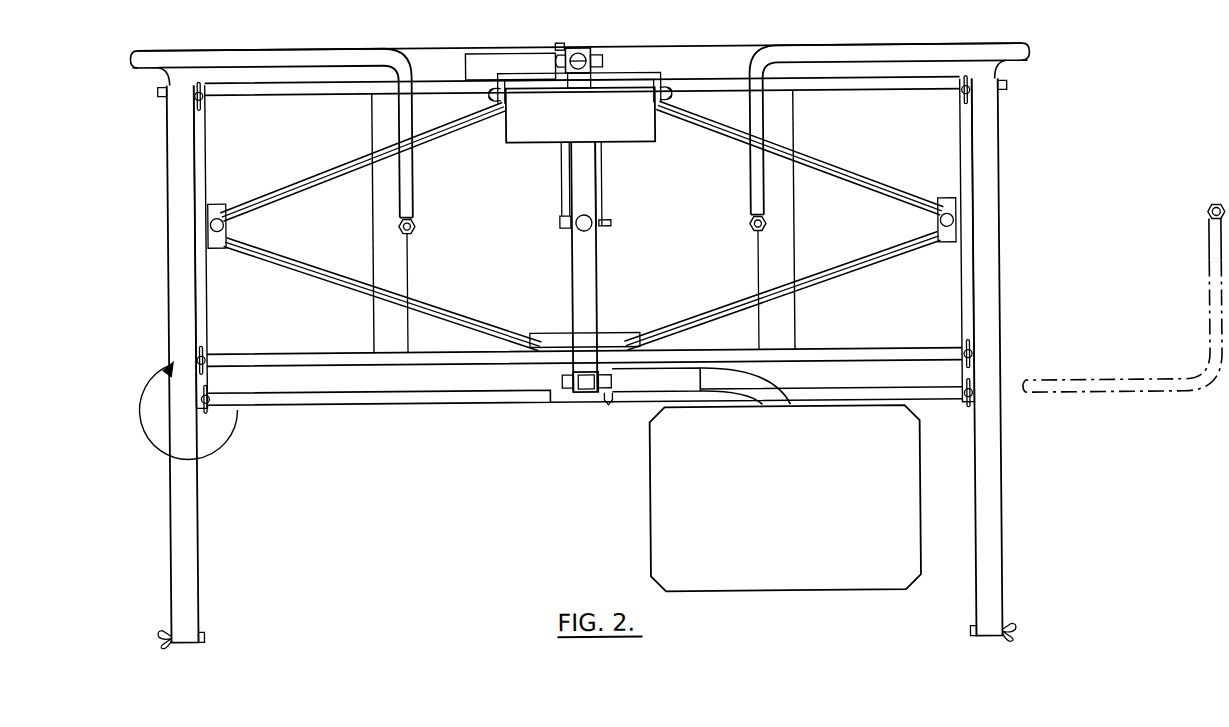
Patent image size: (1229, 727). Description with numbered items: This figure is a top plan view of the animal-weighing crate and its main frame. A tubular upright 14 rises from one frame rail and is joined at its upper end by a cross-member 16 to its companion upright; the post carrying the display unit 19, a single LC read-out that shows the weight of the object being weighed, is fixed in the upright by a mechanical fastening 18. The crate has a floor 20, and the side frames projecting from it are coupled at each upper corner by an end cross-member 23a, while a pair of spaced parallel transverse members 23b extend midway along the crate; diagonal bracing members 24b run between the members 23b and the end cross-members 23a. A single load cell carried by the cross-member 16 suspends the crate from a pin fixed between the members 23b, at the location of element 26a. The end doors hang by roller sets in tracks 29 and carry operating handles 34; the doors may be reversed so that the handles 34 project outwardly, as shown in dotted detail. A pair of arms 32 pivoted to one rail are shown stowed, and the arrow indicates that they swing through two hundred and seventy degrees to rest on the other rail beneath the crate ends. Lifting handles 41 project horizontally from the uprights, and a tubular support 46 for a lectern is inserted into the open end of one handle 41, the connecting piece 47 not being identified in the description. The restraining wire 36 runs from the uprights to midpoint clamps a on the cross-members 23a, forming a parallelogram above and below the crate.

The upright 14 is at (595, 49).
The cross-member 16 is at (585, 262).
The mechanical fastening 18 is at (607, 62).
The display unit 19 is at (586, 131).
The floor 20 is at (660, 278).
The cross-member 23a is at (203, 300).
The parallel members 23b is at (567, 196).
The bracing members 24b is at (442, 140).
The pin 26a is at (612, 222).
The track 29 is at (183, 206).
The arms 32 is at (425, 401).
The operating handle 34 is at (415, 190).
The wire 36 is at (338, 273).
The lifting handles 41 is at (492, 62).
The tubular support 46 is at (775, 500).
The curved tube 47 is at (752, 385).
The midpoint clamp a is at (225, 222).